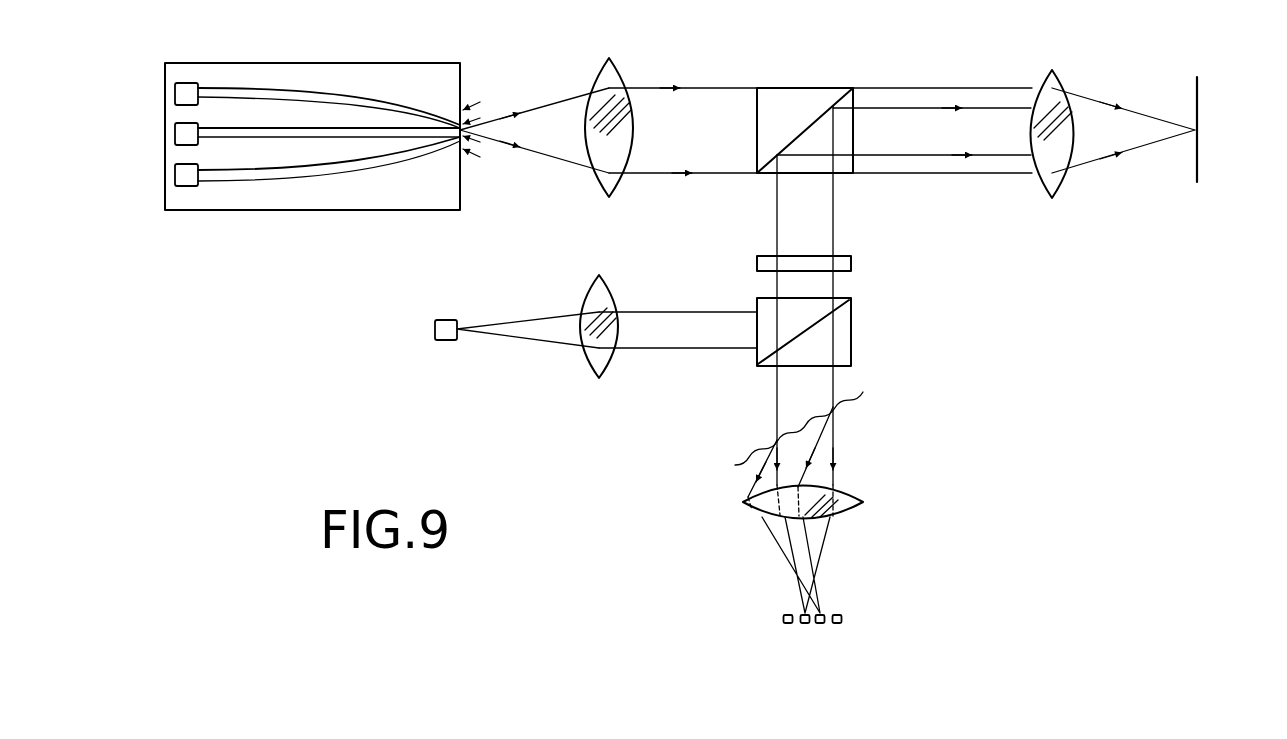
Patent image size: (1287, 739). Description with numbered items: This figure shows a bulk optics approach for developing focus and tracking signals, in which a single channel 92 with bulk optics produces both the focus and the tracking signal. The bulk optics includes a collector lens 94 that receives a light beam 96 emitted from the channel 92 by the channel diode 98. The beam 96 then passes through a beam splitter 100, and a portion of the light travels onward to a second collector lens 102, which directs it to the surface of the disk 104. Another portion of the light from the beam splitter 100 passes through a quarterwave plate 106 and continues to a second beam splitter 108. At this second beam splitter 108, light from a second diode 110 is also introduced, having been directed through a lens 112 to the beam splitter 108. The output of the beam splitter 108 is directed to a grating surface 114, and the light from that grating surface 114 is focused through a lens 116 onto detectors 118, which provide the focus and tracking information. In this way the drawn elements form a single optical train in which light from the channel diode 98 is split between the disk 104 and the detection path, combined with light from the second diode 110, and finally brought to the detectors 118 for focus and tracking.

The channel 92 is at (383, 130).
The collector lens 94 is at (617, 78).
The light beam 96 is at (553, 103).
The channel diode 98 is at (175, 135).
The beam splitter 100 is at (808, 90).
The collector lens 102 is at (1050, 72).
The disk 104 is at (1200, 92).
The quarterwave plate 106 is at (855, 263).
The beam splitter 108 is at (853, 327).
The second diode 110 is at (445, 342).
The lens 112 is at (592, 295).
The grating surface 114 is at (865, 393).
The lens 116 is at (865, 501).
The detectors 118 is at (805, 624).